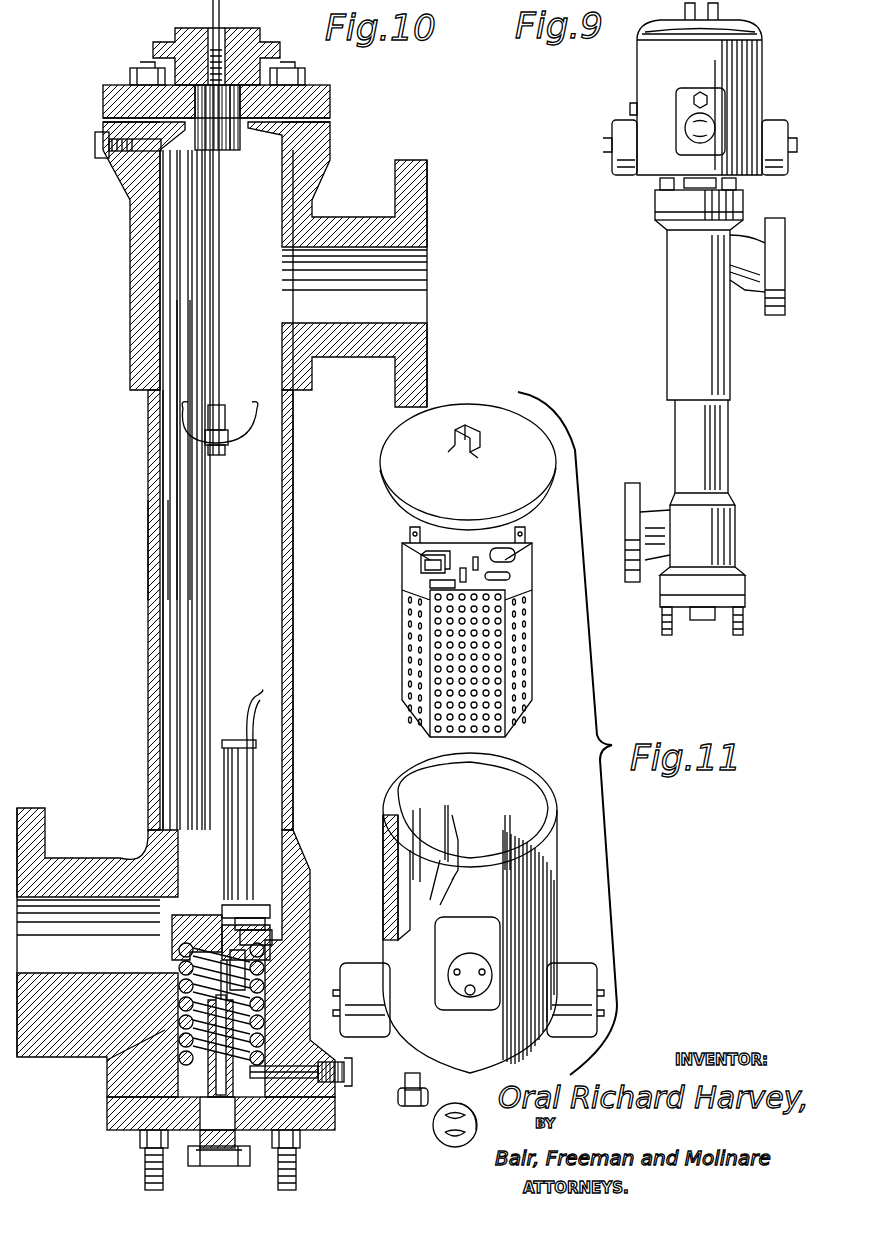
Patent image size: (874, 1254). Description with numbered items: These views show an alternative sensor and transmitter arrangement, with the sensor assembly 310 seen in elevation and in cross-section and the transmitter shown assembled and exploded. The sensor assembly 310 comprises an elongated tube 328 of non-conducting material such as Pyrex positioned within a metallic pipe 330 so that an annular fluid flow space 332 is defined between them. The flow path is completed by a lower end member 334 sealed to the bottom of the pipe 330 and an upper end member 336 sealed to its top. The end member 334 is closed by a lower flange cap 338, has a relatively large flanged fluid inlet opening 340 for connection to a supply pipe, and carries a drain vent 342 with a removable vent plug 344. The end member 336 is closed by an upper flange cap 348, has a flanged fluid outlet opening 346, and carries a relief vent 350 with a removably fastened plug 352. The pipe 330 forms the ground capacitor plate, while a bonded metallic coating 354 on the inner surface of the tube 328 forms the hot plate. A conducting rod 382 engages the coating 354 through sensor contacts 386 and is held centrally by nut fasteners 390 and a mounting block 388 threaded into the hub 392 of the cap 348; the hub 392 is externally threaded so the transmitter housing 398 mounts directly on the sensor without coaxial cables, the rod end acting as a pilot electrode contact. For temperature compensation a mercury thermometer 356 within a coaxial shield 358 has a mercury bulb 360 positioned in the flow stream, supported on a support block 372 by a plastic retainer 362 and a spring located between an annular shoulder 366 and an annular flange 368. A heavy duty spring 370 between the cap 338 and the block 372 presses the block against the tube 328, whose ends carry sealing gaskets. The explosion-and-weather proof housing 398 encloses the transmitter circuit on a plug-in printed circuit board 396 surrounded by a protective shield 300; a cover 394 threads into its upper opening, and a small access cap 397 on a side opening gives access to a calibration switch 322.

In FIG. 11, the protective shield 300 is at (442, 632).
In FIG. 9, the sensor assembly 310 is at (736, 407).
In FIG. 11, the calibration switch 322 is at (465, 990).
In FIG. 10, the elongated tube 328 is at (177, 512).
In FIG. 10, the metallic pipe 330 is at (150, 541).
In FIG. 9, the metallic pipe 330 is at (720, 438).
In FIG. 10, the annular fluid flow space 332 is at (168, 567).
In FIG. 10, the end member 334 is at (148, 1010).
In FIG. 9, the end member 334 is at (730, 520).
In FIG. 10, the end member 336 is at (130, 288).
In FIG. 9, the end member 336 is at (667, 266).
In FIG. 10, the lower flange cap 338 is at (110, 1125).
In FIG. 9, the lower flange cap 338 is at (745, 598).
In FIG. 10, the fluid inlet opening 340 is at (50, 960).
In FIG. 9, the fluid inlet opening 340 is at (625, 503).
In FIG. 10, the drain vent 342 is at (305, 1078).
In FIG. 10, the vent plug 344 is at (346, 1073).
In FIG. 10, the fluid outlet opening 346 is at (427, 272).
In FIG. 9, the fluid outlet opening 346 is at (758, 280).
In FIG. 10, the upper flange cap 348 is at (332, 100).
In FIG. 9, the upper flange cap 348 is at (655, 203).
In FIG. 10, the relief vent 350 is at (135, 147).
In FIG. 10, the plug 352 is at (98, 150).
In FIG. 10, the bonded metallic coating 354 is at (190, 485).
In FIG. 10, the mercury thermometer 356 is at (238, 792).
In FIG. 10, the coaxial shield 358 is at (250, 772).
In FIG. 10, the mercury bulb 360 is at (240, 982).
In FIG. 10, the plastic retainer 362 is at (255, 905).
In FIG. 10, the annular shoulder 366 is at (252, 944).
In FIG. 10, the annular flange 368 is at (248, 922).
In FIG. 10, the heavy duty spring 370 is at (183, 1025).
In FIG. 10, the support block 372 is at (172, 935).
In FIG. 10, the conducting rod 382 is at (213, 218).
In FIG. 10, the sensor contacts 386 is at (183, 440).
In FIG. 10, the mounting block 388 is at (185, 30).
In FIG. 10, the nut fasteners 390 is at (222, 18).
In FIG. 10, the hub 392 is at (255, 40).
In FIG. 11, the cover 394 is at (405, 492).
In FIG. 9, the cover 394 is at (735, 22).
In FIG. 11, the plug-in printed circuit board 396 is at (421, 552).
In FIG. 11, the access cap 397 is at (434, 1118).
In FIG. 9, the access cap 397 is at (715, 125).
In FIG. 11, the housing 398 is at (468, 929).
In FIG. 9, the housing 398 is at (755, 52).